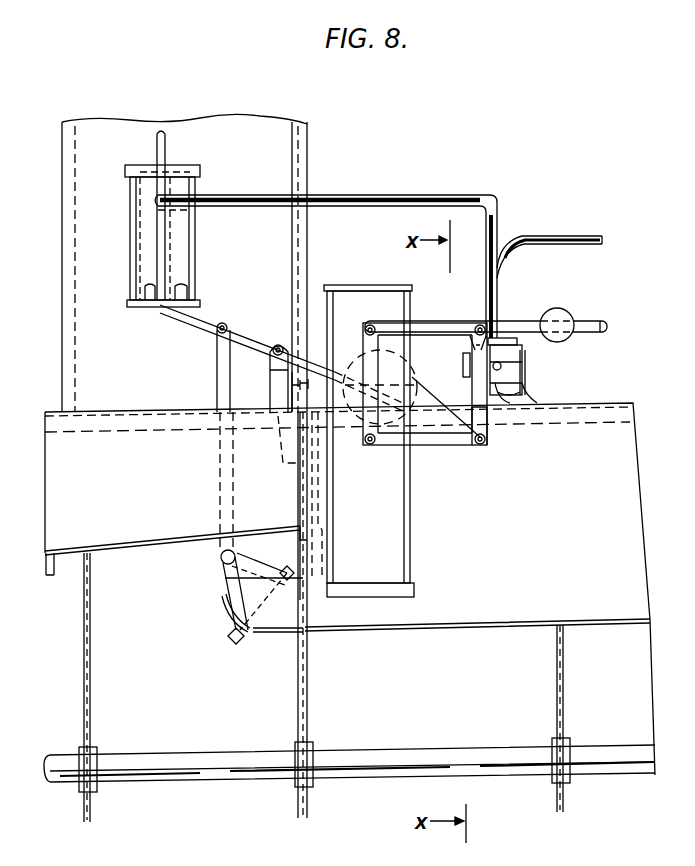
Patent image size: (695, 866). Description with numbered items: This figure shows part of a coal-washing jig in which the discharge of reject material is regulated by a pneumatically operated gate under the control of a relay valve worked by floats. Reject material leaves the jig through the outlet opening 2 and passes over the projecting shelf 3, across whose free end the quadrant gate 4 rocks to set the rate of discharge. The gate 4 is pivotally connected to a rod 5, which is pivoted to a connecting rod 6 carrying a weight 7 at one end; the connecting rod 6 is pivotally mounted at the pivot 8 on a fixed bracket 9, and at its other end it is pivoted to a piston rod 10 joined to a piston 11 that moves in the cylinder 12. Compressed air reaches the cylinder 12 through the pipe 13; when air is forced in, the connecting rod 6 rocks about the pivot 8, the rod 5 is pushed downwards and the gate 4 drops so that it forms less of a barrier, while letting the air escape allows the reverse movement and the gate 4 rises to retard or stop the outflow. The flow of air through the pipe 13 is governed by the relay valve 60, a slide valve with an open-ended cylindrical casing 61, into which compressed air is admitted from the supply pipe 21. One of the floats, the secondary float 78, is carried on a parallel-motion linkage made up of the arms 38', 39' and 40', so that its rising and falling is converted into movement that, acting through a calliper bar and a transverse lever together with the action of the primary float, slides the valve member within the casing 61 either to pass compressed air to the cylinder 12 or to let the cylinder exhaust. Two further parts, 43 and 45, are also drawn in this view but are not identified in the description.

The outlet opening 2 is at (313, 626).
The projecting shelf 3 is at (269, 634).
The quadrant gate 4 is at (222, 610).
The rod 5 is at (220, 462).
The connecting rod 6 is at (197, 318).
The weight 7 is at (480, 445).
The pivot 8 is at (281, 345).
The fixed bracket 9 is at (281, 388).
The piston rod 10 is at (175, 243).
The piston 11 is at (195, 172).
The cylinder 12 is at (148, 246).
The pipe 13 is at (158, 143).
The pipe 21 is at (565, 235).
The parallel-motion linkage arm 38' is at (425, 436).
The parallel-motion linkage arm 39' is at (486, 306).
The parallel-motion linkage arm 40' is at (425, 396).
The knob 43 is at (559, 318).
The valve outlet 45 is at (538, 400).
The relay valve 60 is at (536, 361).
The cylindrical casing 61 is at (526, 372).
The secondary float 78 is at (373, 520).